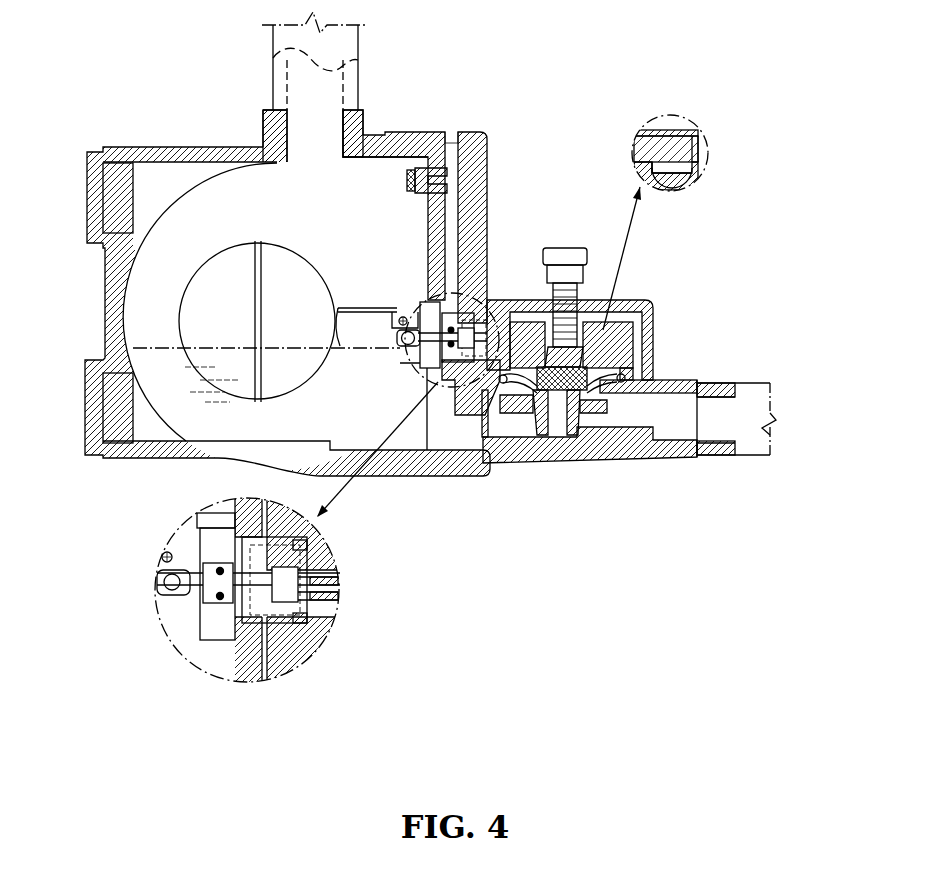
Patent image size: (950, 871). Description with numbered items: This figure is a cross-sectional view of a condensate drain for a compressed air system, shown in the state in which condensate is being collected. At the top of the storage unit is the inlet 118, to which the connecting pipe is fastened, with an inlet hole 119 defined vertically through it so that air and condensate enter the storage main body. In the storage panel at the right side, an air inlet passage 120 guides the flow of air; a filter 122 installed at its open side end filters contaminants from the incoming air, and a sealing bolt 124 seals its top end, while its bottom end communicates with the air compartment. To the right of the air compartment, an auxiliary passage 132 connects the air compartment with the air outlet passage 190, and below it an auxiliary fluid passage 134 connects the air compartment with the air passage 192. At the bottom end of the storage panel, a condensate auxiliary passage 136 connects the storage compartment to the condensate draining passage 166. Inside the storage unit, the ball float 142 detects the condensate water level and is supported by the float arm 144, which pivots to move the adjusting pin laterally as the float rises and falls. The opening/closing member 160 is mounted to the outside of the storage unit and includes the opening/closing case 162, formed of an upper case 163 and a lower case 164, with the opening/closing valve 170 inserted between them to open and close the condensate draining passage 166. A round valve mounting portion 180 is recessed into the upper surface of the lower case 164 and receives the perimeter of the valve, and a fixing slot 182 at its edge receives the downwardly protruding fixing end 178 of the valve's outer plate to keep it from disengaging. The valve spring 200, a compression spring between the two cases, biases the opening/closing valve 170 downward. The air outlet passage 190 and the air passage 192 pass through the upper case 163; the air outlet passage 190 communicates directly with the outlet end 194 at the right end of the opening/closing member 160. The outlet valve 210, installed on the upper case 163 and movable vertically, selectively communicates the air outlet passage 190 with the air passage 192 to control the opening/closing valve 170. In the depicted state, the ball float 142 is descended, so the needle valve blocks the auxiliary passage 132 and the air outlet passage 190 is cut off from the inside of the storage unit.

The inlet 118 is at (368, 108).
The inlet hole 119 is at (293, 128).
The air inlet passage 120 is at (468, 200).
The filter 122 is at (414, 168).
The sealing bolt 124 is at (457, 135).
The auxiliary passage 132 is at (318, 584).
The auxiliary fluid passage 134 is at (322, 608).
The condensate auxiliary passage 136 is at (463, 430).
The ball float 142 is at (176, 318).
The float arm 144 is at (367, 313).
The opening/closing member 160 is at (825, 620).
The opening/closing case 162 is at (773, 305).
The upper case 163 is at (652, 320).
The lower case 164 is at (653, 374).
The condensate draining passage 166 is at (530, 468).
The opening/closing valve 170 is at (562, 440).
The fixing end 178 is at (692, 172).
The valve mounting portion 180 is at (622, 384).
The fixing slot 182 is at (694, 176).
The air outlet passage 190 is at (654, 317).
The air passage 192 is at (512, 472).
The outlet end 194 is at (680, 456).
The valve spring 200 is at (550, 445).
The outlet valve 210 is at (572, 248).